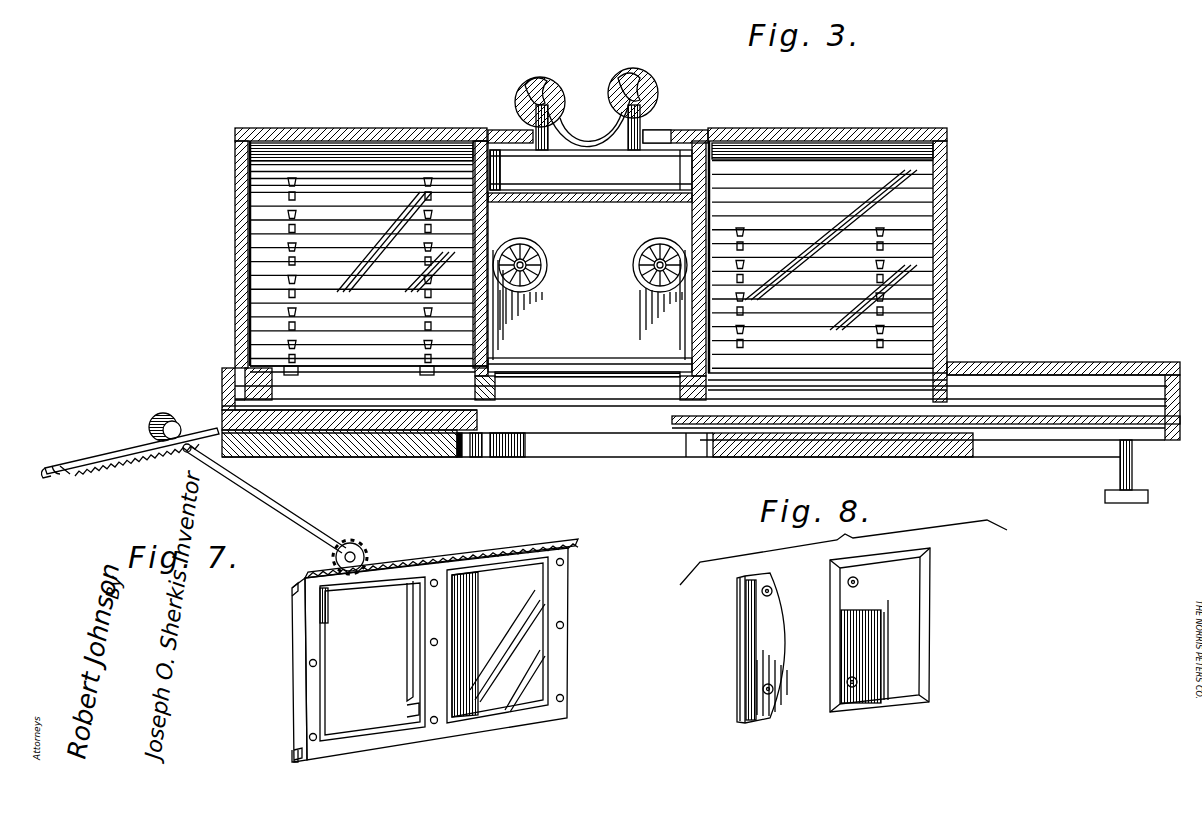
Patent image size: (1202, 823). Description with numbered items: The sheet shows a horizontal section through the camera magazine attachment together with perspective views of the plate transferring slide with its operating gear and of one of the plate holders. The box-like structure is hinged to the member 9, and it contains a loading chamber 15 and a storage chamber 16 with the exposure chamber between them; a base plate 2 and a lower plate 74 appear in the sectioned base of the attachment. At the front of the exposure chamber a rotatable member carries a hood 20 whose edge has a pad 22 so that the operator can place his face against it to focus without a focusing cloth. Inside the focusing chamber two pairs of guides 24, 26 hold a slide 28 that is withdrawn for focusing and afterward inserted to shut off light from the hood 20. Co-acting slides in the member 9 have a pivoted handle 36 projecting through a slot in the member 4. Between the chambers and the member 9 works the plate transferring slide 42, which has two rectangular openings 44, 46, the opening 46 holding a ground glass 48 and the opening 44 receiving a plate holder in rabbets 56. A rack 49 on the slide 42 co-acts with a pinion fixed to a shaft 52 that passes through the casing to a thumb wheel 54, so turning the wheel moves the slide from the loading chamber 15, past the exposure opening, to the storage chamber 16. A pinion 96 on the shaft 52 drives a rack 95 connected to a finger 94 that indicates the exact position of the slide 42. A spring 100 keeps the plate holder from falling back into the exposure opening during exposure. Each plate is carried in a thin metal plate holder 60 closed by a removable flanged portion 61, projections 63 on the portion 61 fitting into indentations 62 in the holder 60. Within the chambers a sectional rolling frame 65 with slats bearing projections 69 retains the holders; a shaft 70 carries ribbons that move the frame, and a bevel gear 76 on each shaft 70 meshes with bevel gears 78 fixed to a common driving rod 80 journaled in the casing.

In FIG. 3, the base plate 2 is at (785, 458).
In FIG. 3, the member 4 is at (705, 458).
In FIG. 3, the member 9 is at (1170, 440).
In FIG. 3, the loading chamber 15 is at (240, 191).
In FIG. 3, the storage chamber 16 is at (947, 283).
In FIG. 3, the hood 20 is at (600, 125).
In FIG. 3, the pad 22 is at (640, 95).
In FIG. 3, the guides 24 is at (520, 190).
In FIG. 3, the guides 26 is at (520, 238).
In FIG. 3, the slide 28 is at (615, 202).
In FIG. 3, the pivoted handle 36 is at (1118, 503).
In FIG. 3, the plate transferring slide 42 is at (235, 380).
In FIG. 7, the plate transferring slide 42 is at (296, 681).
In FIG. 3, the rectangular opening 44 is at (328, 372).
In FIG. 7, the rectangular opening 44 is at (340, 626).
In FIG. 7, the rectangular opening 46 is at (560, 671).
In FIG. 7, the ground glass 48 is at (540, 606).
In FIG. 7, the rack 49 is at (440, 560).
In FIG. 7, the shaft 52 is at (300, 522).
In FIG. 3, the thumb wheel 54 is at (165, 412).
In FIG. 3, the rabbets 56 is at (268, 372).
In FIG. 7, the plate holder 60 is at (366, 553).
In FIG. 8, the plate holder 60 is at (912, 636).
In FIG. 8, the removable flanged portion 61 is at (760, 632).
In FIG. 8, the indentations 62 is at (853, 588).
In FIG. 8, the projections 63 is at (770, 588).
In FIG. 3, the sectional rolling frame 65 is at (915, 210).
In FIG. 3, the projections 69 is at (285, 296).
In FIG. 3, the shaft 70 is at (240, 246).
In FIG. 3, the floor plate 74 is at (590, 355).
In FIG. 3, the bevel gear 76 is at (505, 305).
In FIG. 3, the bevel gears 78 is at (660, 140).
In FIG. 3, the driving rod 80 is at (540, 285).
In FIG. 3, the finger 94 is at (70, 474).
In FIG. 3, the rack 95 is at (150, 450).
In FIG. 3, the pinion 96 is at (430, 243).
In FIG. 3, the spring 100 is at (640, 372).